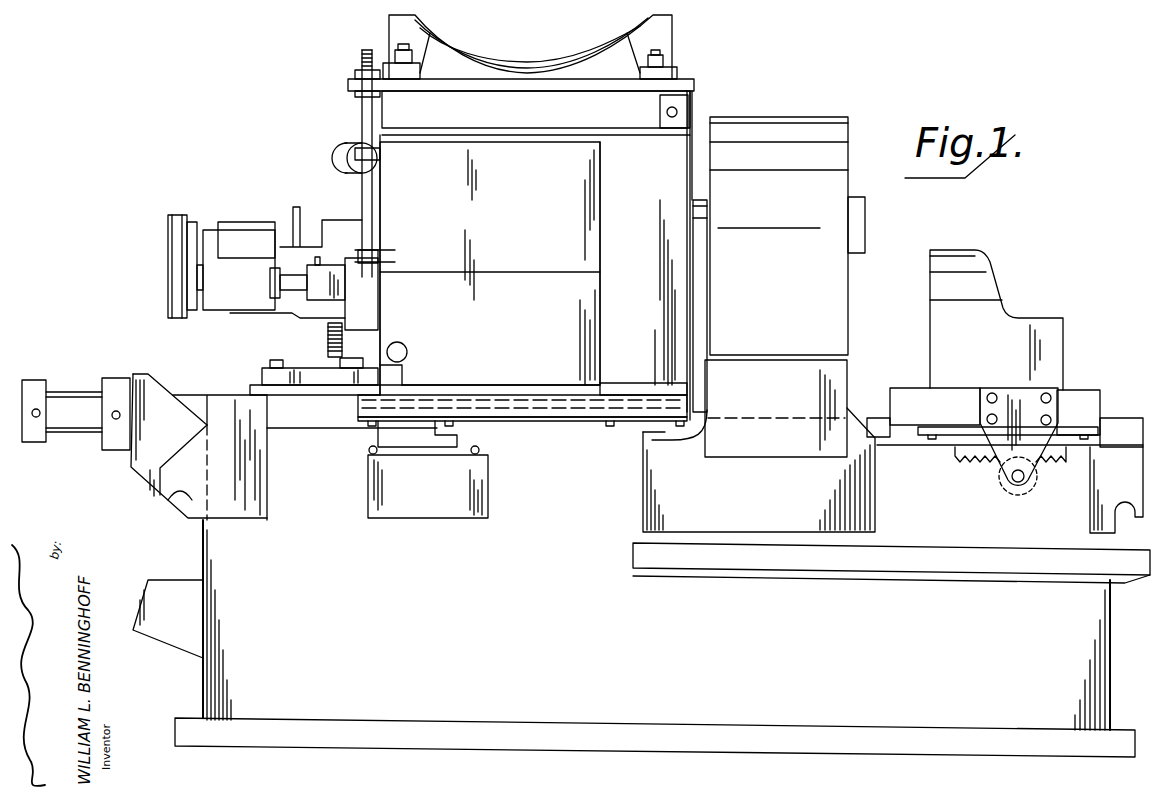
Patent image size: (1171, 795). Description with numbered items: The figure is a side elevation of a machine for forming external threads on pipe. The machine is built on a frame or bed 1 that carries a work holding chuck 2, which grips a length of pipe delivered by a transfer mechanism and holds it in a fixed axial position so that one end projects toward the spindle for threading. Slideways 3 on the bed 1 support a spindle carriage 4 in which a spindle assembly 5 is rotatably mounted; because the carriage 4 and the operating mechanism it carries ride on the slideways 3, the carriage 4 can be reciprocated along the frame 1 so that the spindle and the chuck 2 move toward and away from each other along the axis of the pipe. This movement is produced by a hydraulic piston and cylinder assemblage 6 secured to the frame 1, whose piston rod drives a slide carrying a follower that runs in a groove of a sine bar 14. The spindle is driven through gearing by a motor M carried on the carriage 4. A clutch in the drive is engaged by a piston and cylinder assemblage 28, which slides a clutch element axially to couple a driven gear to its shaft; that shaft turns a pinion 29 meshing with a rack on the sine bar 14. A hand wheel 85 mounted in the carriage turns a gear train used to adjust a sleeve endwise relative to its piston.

The motor M is at (668, 38).
The frame or bed 1 is at (641, 582).
The work holding chuck 2 is at (988, 272).
The slideways 3 is at (523, 407).
The spindle carriage 4 is at (660, 175).
The spindle assembly 5 is at (702, 196).
The hydraulic piston and cylinder assemblage 6 is at (74, 434).
The sine bar 14 is at (308, 340).
The piston and cylinder assemblage 28 is at (268, 305).
The pinion 29 is at (327, 348).
The hand wheel 85 is at (165, 300).